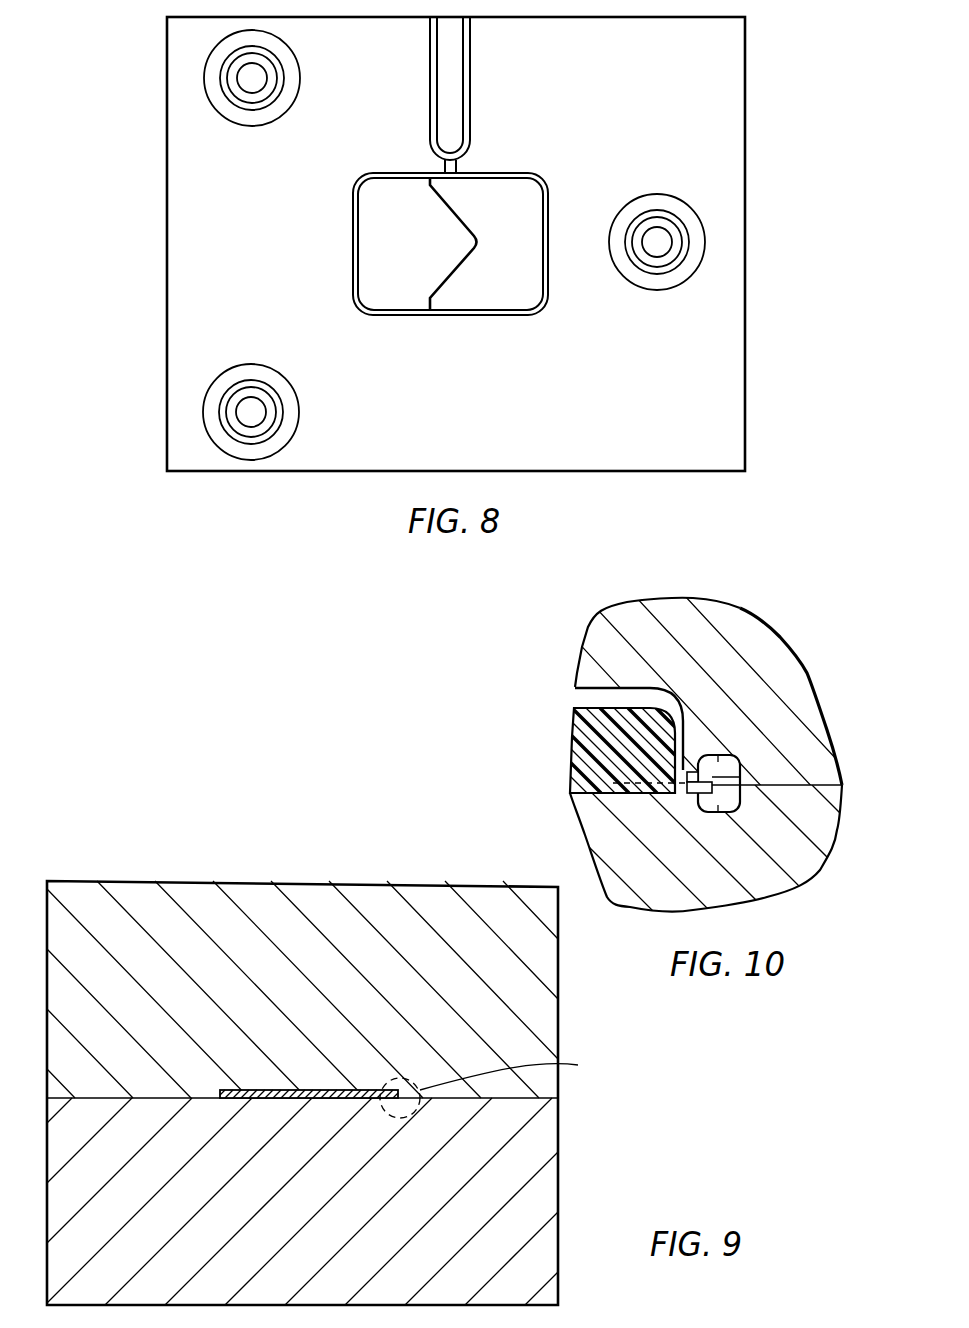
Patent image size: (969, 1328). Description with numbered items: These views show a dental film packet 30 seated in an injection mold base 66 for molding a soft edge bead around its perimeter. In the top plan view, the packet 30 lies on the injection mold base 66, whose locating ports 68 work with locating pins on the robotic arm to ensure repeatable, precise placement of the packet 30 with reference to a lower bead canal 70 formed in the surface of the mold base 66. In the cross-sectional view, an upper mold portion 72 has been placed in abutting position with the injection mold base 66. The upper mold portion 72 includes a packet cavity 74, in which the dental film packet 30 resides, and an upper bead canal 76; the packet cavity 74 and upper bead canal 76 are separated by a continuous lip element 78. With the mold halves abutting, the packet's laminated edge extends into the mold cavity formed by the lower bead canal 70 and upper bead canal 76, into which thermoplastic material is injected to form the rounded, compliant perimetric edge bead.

In FIG. 8, the dental film packet 30 is at (513, 288).
In FIG. 10, the dental film packet 30 is at (587, 752).
In FIG. 9, the dental film packet 30 is at (290, 1100).
In FIG. 8, the injection mold base 66 is at (745, 387).
In FIG. 10, the injection mold base 66 is at (805, 865).
In FIG. 9, the injection mold base 66 is at (558, 1230).
In FIG. 8, the locating ports 68 is at (275, 69).
In FIG. 10, the lower bead canal 70 is at (722, 803).
In FIG. 10, the upper mold portion 72 is at (812, 740).
In FIG. 9, the upper mold portion 72 is at (558, 1012).
In FIG. 10, the packet cavity 74 is at (622, 695).
In FIG. 10, the upper bead canal 76 is at (732, 757).
In FIG. 10, the continuous lip element 78 is at (700, 770).